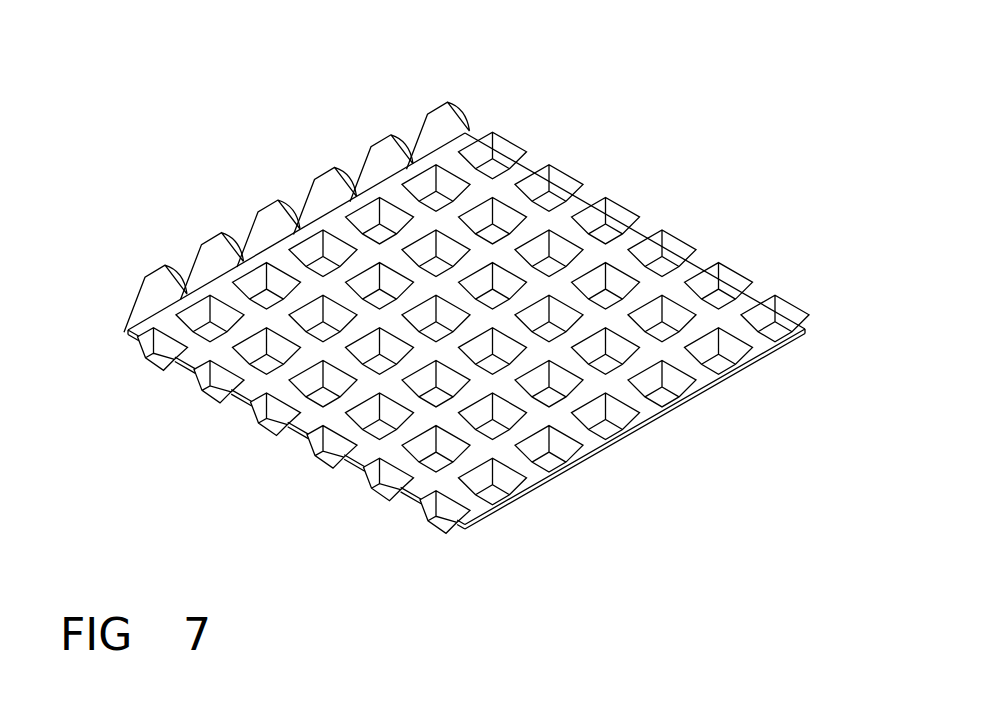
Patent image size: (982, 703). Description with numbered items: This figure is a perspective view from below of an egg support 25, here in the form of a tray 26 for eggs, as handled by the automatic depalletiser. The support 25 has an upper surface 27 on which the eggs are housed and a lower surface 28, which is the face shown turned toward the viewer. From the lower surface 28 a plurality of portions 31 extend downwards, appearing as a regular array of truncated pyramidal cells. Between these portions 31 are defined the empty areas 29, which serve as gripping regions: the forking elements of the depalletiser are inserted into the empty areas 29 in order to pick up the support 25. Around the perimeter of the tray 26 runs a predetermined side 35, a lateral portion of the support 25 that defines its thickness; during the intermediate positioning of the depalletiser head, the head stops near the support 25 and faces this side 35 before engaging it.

The egg support 25 is at (752, 160).
The tray for eggs 26 is at (759, 299).
The upper surface 27 is at (356, 120).
The lower surface 28 is at (746, 423).
The empty areas 29 is at (189, 367).
The portion extending downwards 31 is at (261, 426).
The predetermined side 35 is at (252, 189).